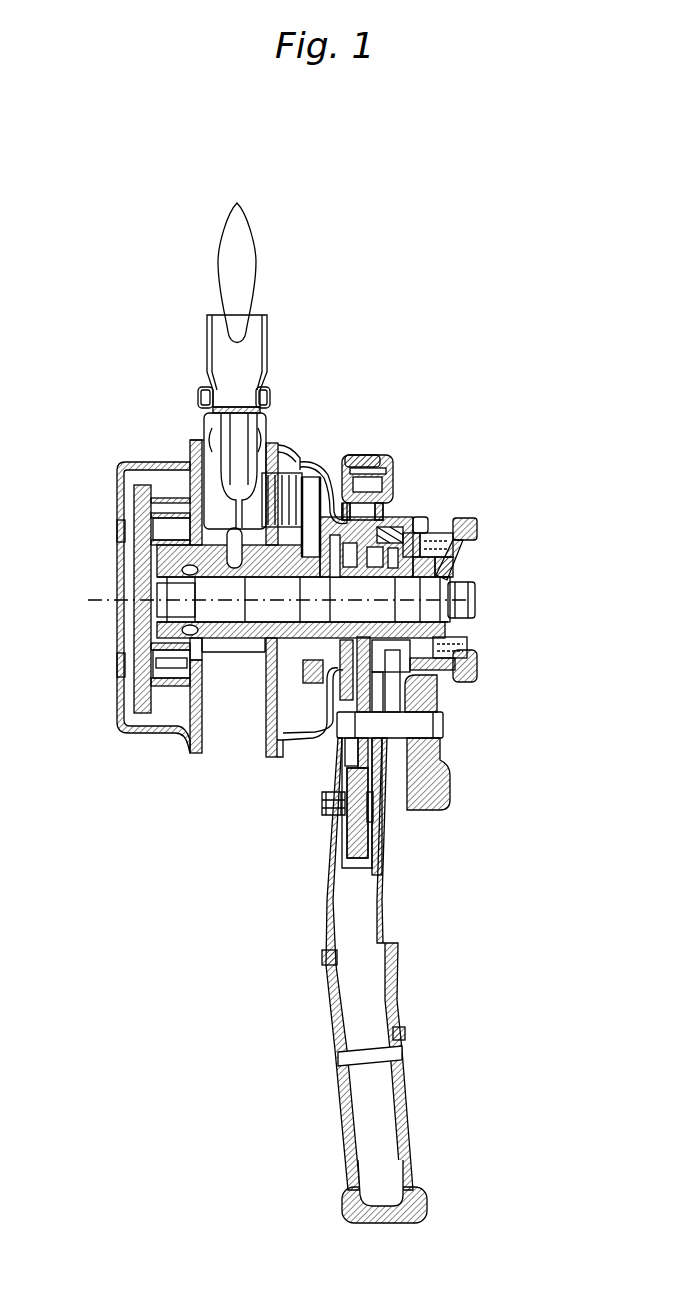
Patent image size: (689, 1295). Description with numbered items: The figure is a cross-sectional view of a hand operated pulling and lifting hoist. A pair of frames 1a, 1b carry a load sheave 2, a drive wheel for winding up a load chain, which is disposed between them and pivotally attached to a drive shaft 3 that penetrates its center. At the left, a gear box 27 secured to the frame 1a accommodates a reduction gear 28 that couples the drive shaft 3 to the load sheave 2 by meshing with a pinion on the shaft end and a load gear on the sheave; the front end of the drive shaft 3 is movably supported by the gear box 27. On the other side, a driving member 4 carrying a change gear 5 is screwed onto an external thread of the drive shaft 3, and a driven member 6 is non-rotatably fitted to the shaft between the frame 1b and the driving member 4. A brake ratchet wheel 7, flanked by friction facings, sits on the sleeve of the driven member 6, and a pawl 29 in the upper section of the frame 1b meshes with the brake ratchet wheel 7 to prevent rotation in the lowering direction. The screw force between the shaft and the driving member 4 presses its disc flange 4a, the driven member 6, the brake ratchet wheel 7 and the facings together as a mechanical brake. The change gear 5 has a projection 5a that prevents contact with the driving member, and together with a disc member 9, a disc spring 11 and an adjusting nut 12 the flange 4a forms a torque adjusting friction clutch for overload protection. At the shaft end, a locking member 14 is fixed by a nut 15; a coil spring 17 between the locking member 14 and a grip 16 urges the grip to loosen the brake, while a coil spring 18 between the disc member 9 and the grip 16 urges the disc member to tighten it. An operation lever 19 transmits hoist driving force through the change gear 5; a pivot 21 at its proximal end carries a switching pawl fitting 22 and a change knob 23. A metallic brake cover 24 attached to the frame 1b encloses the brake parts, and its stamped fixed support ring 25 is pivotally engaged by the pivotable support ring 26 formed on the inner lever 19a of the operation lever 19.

The frame 1a is at (196, 757).
The frame 1b is at (272, 760).
The load sheave 2 is at (228, 650).
The drive shaft 3 is at (160, 565).
The driving member 4 is at (398, 530).
The disc flange 4a is at (395, 520).
The change gear 5 is at (393, 485).
The projection 5a is at (358, 500).
The driven member 6 is at (300, 480).
The brake ratchet wheel 7 is at (298, 690).
The disc member 9 is at (472, 622).
The disc spring 11 is at (415, 545).
The adjusting nut 12 is at (446, 540).
The locking member 14 is at (482, 560).
The nut 15 is at (490, 580).
The grip 16 is at (470, 540).
The coil spring 17 is at (488, 635).
The coil spring 18 is at (432, 555).
The operation lever 19 is at (334, 1040).
The inner lever 19a is at (340, 760).
The pivot 21 is at (445, 735).
The switching pawl fitting 22 is at (387, 790).
The change knob 23 is at (445, 797).
The brake cover 24 is at (290, 452).
The fixed support ring 25 is at (440, 692).
The pivotable support ring 26 is at (478, 672).
The gear box 27 is at (133, 735).
The reduction gear 28 is at (132, 690).
The pawl 29 is at (333, 490).